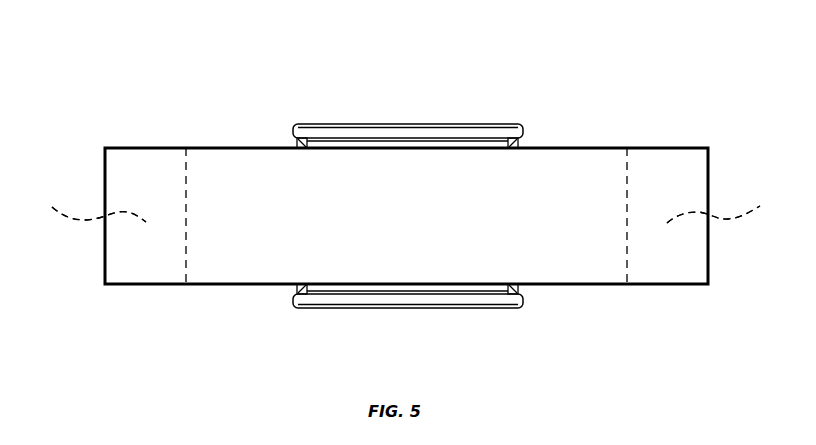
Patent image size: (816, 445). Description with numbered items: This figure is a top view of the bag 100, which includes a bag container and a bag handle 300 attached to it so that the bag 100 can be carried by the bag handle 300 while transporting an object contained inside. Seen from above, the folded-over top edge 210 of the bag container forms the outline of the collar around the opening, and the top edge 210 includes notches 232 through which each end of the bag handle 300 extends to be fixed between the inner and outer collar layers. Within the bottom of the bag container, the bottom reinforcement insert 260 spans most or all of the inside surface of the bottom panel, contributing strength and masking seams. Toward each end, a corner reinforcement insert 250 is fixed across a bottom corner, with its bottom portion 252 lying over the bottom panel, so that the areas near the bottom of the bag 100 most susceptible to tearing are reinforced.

The bag 100 is at (178, 51).
The top edge 210 is at (670, 147).
The notches 232 is at (296, 143).
The corner reinforcement insert 250 is at (410, 196).
The bottom portion 252 is at (406, 214).
The bottom reinforcement insert 260 is at (568, 249).
The bag handle 300 is at (402, 133).